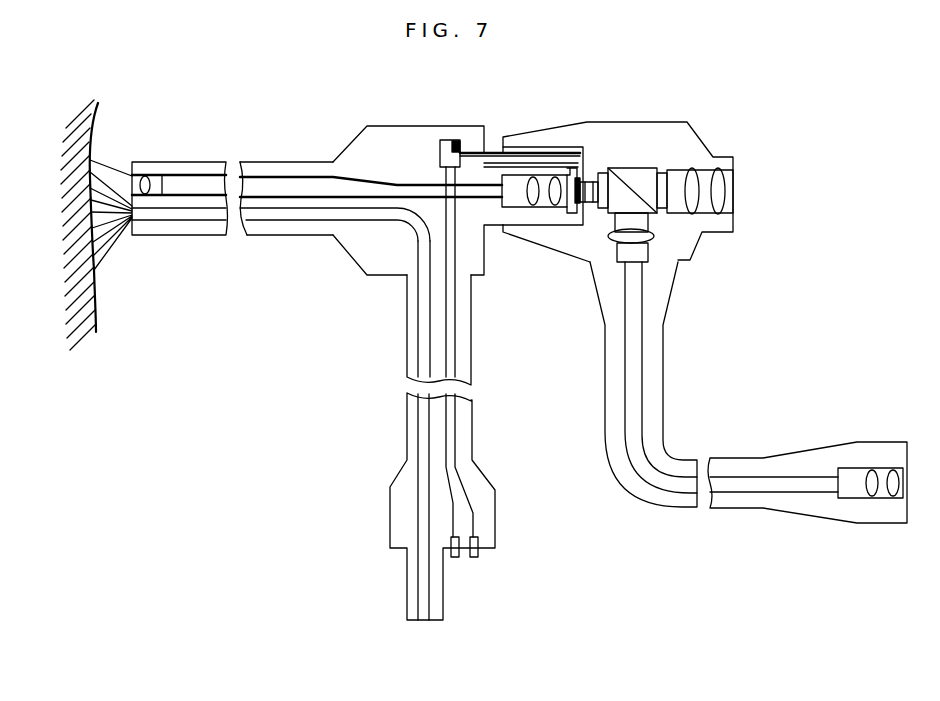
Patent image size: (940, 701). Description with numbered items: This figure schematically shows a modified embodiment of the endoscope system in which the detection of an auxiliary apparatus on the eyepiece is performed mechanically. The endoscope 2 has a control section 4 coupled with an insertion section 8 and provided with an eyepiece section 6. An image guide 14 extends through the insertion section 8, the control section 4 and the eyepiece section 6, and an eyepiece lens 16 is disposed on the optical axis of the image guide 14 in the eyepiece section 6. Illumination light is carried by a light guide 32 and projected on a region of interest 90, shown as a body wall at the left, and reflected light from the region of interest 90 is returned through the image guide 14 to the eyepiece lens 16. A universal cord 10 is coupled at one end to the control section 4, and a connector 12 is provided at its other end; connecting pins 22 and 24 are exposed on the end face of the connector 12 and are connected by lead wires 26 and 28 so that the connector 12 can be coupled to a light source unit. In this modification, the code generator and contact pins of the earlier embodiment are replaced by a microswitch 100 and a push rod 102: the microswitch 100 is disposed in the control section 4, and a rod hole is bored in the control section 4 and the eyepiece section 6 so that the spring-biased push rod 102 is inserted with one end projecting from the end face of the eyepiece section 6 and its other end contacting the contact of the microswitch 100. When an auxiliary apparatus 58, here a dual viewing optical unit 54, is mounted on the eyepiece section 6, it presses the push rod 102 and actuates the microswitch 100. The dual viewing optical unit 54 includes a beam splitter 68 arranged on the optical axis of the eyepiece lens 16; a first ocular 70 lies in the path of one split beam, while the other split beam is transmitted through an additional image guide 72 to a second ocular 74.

The endoscope 2 is at (356, 265).
The control section 4 is at (390, 126).
The eyepiece section 6 is at (492, 147).
The insertion section 8 is at (272, 162).
The universal cord 10 is at (472, 303).
The connector 12 is at (496, 495).
The image guide 14 is at (179, 162).
The eyepiece lens 16 is at (545, 205).
The connecting pin 22 is at (455, 557).
The connecting pin 24 is at (478, 557).
The lead wire 26 is at (447, 332).
The lead wire 28 is at (455, 413).
The light guide 32 is at (419, 413).
The dual viewing optical unit 54 is at (664, 356).
The auxiliary apparatus 58 is at (558, 137).
The beam splitter 68 is at (655, 205).
The first ocular 70 is at (706, 168).
The additional image guide 72 is at (640, 389).
The second ocular 74 is at (878, 470).
The region of interest 90 is at (97, 312).
The microswitch 100 is at (450, 140).
The push rod 102 is at (528, 160).